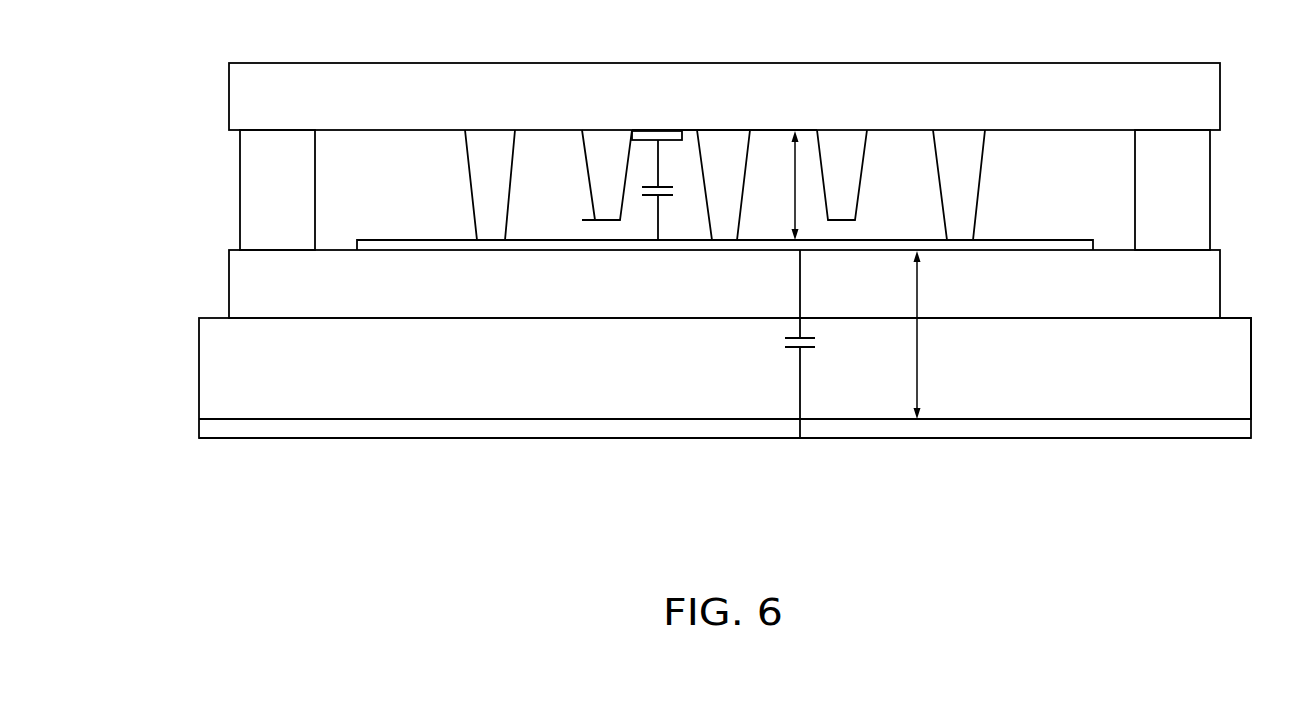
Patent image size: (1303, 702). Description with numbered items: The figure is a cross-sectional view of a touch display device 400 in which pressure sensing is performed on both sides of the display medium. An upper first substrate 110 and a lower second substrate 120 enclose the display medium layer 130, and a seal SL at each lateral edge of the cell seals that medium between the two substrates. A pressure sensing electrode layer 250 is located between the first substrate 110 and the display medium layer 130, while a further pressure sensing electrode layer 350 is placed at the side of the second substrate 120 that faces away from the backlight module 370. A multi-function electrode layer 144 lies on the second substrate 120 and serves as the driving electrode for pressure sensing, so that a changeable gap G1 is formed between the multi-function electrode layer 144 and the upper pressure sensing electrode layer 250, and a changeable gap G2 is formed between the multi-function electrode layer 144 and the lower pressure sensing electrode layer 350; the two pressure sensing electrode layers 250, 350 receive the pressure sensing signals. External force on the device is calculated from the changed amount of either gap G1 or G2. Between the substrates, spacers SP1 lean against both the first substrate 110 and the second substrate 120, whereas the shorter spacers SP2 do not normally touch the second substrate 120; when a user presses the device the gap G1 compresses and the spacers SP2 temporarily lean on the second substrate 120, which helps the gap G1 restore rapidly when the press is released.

The touch display device 400 is at (1188, 548).
The first substrate 110 is at (242, 97).
The sealing member SL is at (243, 193).
The second substrate 120 is at (212, 378).
The multi-function electrode layer 144 is at (422, 245).
The spacers SP1 is at (487, 158).
The spacers SP2 is at (610, 157).
The pressure sensing electrode layer 250 is at (668, 131).
The display medium layer 130 is at (903, 158).
The pressure sensing electrode layer 350 is at (710, 432).
The backlight module 370 is at (847, 402).
The changeable gap G1 is at (795, 185).
The changeable gap G2 is at (917, 337).